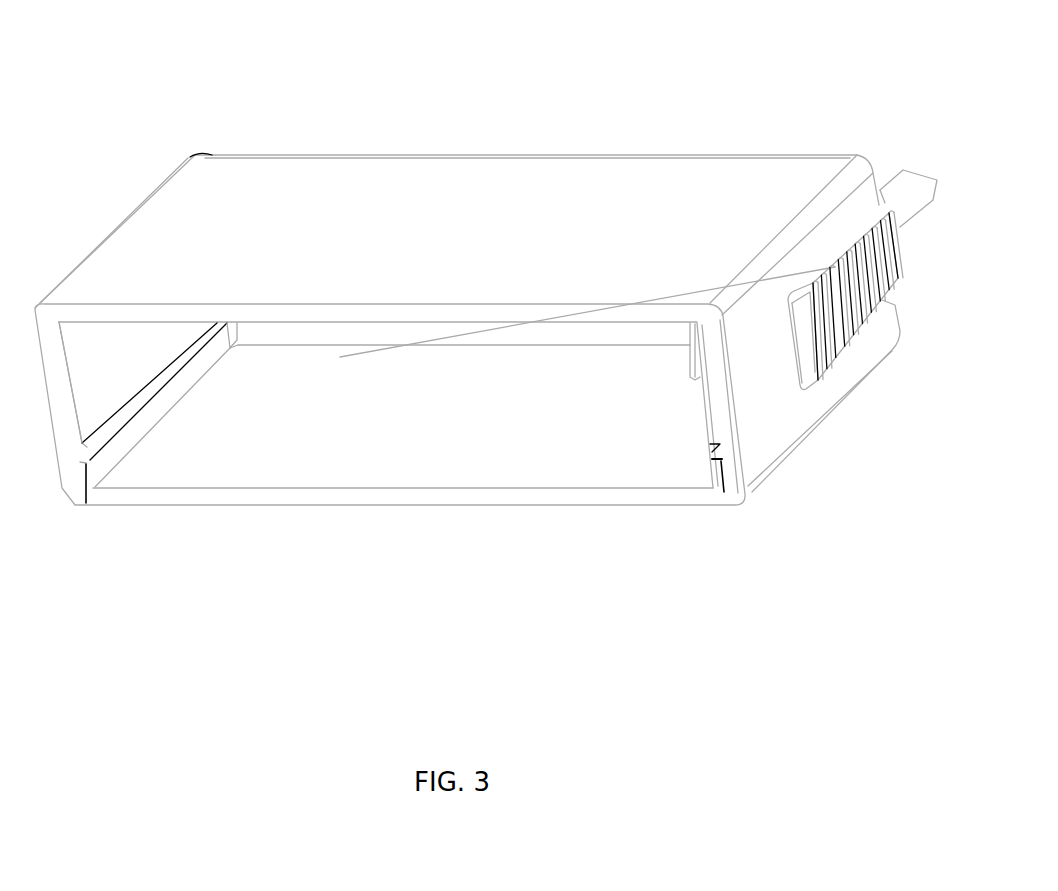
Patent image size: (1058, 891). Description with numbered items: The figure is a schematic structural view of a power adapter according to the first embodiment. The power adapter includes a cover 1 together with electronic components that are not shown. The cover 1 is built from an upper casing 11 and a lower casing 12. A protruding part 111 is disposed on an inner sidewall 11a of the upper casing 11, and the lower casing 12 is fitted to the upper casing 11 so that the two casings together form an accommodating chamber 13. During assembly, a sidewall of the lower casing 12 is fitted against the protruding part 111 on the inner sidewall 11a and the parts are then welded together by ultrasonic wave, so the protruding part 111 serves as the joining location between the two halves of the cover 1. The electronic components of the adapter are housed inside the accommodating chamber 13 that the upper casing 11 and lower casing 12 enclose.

The cover 1 is at (486, 331).
The upper casing 11 is at (665, 310).
The lower casing 12 is at (506, 497).
The accommodating chamber 13 is at (380, 408).
The protruding part 111 is at (115, 428).
The inner sidewall 11a is at (118, 358).